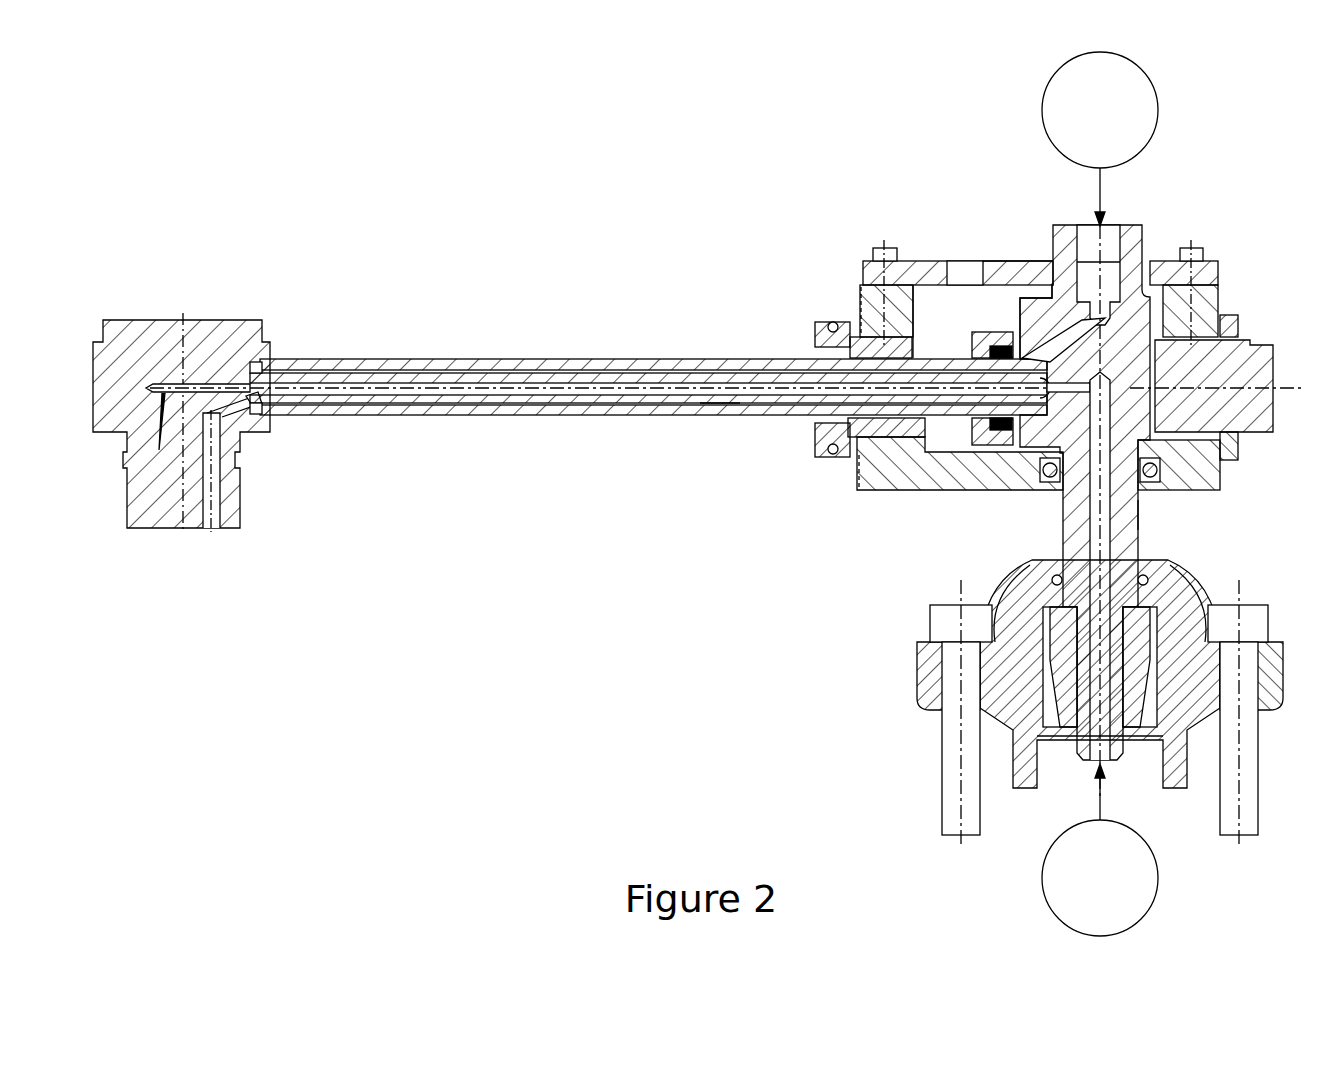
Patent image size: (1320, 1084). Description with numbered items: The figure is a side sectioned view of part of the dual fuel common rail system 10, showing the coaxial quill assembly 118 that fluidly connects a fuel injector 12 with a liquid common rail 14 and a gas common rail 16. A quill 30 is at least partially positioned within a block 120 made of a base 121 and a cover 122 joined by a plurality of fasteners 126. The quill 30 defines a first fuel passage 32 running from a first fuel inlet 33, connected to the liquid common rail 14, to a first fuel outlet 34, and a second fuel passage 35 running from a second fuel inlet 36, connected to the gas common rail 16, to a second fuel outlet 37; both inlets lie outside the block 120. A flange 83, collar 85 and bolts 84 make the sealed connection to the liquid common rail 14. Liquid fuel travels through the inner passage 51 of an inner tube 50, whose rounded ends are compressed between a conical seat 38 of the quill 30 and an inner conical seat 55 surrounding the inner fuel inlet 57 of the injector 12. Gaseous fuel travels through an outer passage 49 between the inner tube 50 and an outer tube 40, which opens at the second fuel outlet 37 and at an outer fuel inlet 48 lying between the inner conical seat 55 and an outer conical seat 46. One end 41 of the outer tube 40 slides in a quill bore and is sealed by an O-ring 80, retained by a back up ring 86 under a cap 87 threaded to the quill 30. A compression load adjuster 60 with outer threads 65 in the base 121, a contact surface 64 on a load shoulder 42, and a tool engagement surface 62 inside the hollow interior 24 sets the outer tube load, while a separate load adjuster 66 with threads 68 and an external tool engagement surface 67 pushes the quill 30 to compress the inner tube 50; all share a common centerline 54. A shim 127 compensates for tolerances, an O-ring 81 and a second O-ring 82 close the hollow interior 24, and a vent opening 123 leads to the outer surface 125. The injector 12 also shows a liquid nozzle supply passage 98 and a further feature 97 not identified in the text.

The dual fuel common rail system 10 is at (429, 685).
The fuel injector 12 is at (200, 427).
The liquid common rail 14 is at (1043, 878).
The gas common rail 16 is at (1043, 113).
The hollow interior 24 is at (960, 330).
The quill 30 is at (1140, 513).
The first fuel passage 32 is at (1108, 521).
The first fuel inlet 33 is at (1093, 764).
The first fuel outlet 34 is at (1050, 396).
The second fuel passage 35 is at (1109, 484).
The second fuel inlet 36 is at (1106, 223).
The second fuel outlet 37 is at (1053, 364).
The conical seat 38 is at (1008, 441).
The outer tube 40 is at (606, 374).
The one end 41 is at (1034, 358).
The load shoulder 42 is at (830, 325).
The outer conical seat 46 is at (273, 361).
The outer fuel inlet 48 is at (254, 412).
The outer passage 49 is at (589, 404).
The inner tube 50 is at (518, 406).
The inner passage 51 is at (455, 373).
The common centerline 54 is at (721, 404).
The inner conical seat 55 is at (262, 406).
The inner fuel inlet 57 is at (252, 375).
The compression load adjuster 60 is at (832, 456).
The tool engagement surface 62 is at (922, 437).
The contact surface 64 is at (820, 441).
The outer threads 65 is at (890, 441).
The load adjuster 66 is at (1240, 452).
The tool engagement surface 67 is at (1262, 340).
The threads 68 is at (1222, 481).
The O-ring 80 is at (997, 334).
The O-ring 81 is at (1048, 485).
The second O-ring 82 is at (1153, 262).
The flange 83 is at (918, 673).
The bolts 84 is at (942, 752).
The collar 85 is at (1130, 742).
The back up ring 86 is at (995, 446).
The cap 87 is at (968, 340).
The channel 97 is at (215, 514).
The liquid nozzle supply passage 98 is at (162, 384).
The coaxial quill assembly 118 is at (871, 490).
The block 120 is at (926, 497).
The base 121 is at (940, 492).
The cover 122 is at (928, 262).
The vent opening 123 is at (975, 283).
The outer surface 125 is at (1010, 262).
The fasteners 126 is at (879, 248).
The shim 127 is at (858, 483).